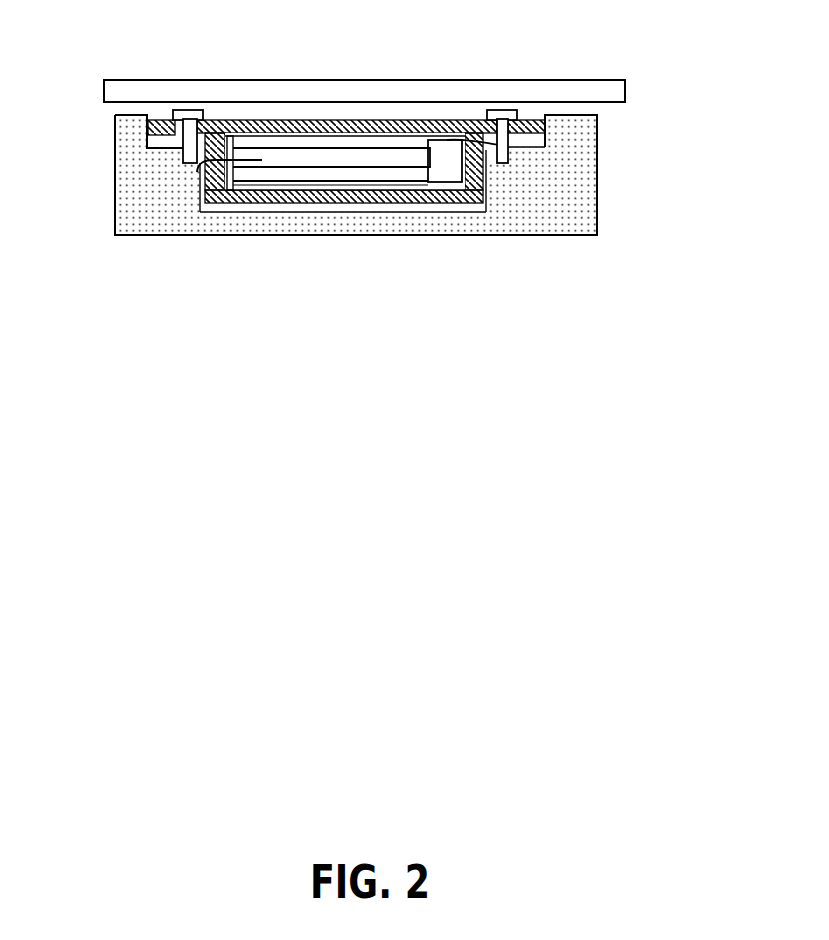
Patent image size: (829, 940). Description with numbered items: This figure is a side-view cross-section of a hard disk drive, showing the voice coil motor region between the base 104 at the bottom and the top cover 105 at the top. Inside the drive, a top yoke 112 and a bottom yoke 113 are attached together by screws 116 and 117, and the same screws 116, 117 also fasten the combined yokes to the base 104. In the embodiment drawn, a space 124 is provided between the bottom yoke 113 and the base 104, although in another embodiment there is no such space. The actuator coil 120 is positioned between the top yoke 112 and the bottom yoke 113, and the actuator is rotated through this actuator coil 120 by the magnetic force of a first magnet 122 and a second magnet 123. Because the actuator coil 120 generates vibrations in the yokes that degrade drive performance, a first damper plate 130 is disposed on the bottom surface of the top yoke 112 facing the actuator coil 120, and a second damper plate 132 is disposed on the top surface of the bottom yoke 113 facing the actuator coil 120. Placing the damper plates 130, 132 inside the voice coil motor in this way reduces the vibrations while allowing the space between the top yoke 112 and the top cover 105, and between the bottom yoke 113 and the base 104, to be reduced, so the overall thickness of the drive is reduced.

The base 104 is at (567, 227).
The top cover 105 is at (327, 90).
The top yoke 112 is at (393, 123).
The bottom yoke 113 is at (395, 195).
The screw 116 is at (190, 113).
The screw 117 is at (508, 113).
The actuator coil 120 is at (200, 213).
The first magnet 122 is at (283, 137).
The second magnet 123 is at (313, 184).
The space 124 is at (353, 207).
The first damper plate 130 is at (497, 143).
The second damper plate 132 is at (447, 187).